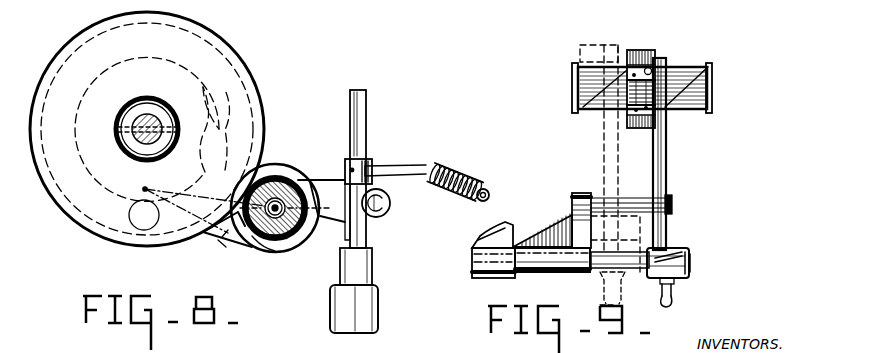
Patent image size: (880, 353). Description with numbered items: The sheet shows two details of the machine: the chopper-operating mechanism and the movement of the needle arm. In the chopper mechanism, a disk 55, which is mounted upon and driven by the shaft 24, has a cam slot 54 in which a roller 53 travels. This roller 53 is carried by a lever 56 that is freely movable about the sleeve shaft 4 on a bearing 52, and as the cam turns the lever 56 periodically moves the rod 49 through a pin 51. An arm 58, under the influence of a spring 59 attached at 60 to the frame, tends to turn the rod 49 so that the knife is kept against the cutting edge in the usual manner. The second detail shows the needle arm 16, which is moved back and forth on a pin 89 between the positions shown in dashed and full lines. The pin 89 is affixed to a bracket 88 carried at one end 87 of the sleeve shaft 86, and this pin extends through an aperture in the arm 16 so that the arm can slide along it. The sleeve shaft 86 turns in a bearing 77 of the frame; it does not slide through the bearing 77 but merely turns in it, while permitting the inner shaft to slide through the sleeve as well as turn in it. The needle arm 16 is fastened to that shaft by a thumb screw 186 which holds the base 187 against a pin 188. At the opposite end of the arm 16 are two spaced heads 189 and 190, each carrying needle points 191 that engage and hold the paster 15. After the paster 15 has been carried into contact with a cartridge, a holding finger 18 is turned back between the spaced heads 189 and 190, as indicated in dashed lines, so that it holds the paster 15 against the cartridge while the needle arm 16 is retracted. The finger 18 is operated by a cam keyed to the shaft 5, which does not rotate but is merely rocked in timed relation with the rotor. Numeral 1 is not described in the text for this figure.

In FIG. 9, the shaft 1 is at (688, 70).
In FIG. 8, the sleeve shaft 4 is at (292, 185).
In FIG. 8, the shaft 5 is at (250, 242).
In FIG. 9, the paster 15 is at (652, 50).
In FIG. 9, the needle arm 16 is at (668, 157).
In FIG. 9, the holding finger 18 is at (574, 88).
In FIG. 8, the shaft 24 is at (160, 123).
In FIG. 8, the rod 49 is at (367, 109).
In FIG. 8, the pin 51 is at (390, 207).
In FIG. 8, the bearing 52 is at (289, 254).
In FIG. 8, the roller 53 is at (135, 223).
In FIG. 8, the cam slot 54 is at (218, 60).
In FIG. 8, the disk 55 is at (250, 115).
In FIG. 8, the lever 56 is at (221, 240).
In FIG. 8, the arm 58 is at (393, 170).
In FIG. 8, the spring 59 is at (480, 181).
In FIG. 8, the spring attachment point 60 is at (504, 190).
In FIG. 9, the bearing 77 is at (497, 277).
In FIG. 9, the sleeve shaft 86 is at (531, 272).
In FIG. 9, the end of sleeve shaft 87 is at (568, 222).
In FIG. 9, the bracket 88 is at (576, 192).
In FIG. 9, the pin 89 is at (673, 203).
In FIG. 9, the thumb screw 186 is at (675, 299).
In FIG. 9, the base 187 is at (690, 268).
In FIG. 9, the pin 188 is at (688, 251).
In FIG. 9, the head 189 is at (630, 113).
In FIG. 9, the head 190 is at (632, 50).
In FIG. 9, the needle points 191 is at (656, 110).